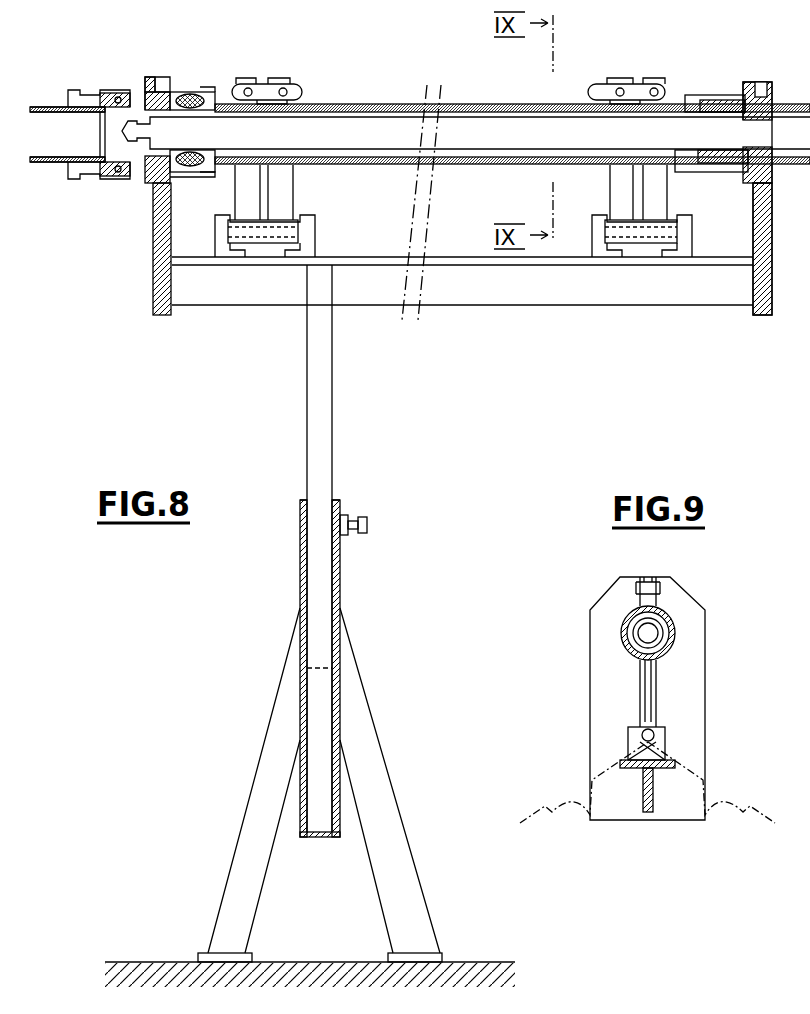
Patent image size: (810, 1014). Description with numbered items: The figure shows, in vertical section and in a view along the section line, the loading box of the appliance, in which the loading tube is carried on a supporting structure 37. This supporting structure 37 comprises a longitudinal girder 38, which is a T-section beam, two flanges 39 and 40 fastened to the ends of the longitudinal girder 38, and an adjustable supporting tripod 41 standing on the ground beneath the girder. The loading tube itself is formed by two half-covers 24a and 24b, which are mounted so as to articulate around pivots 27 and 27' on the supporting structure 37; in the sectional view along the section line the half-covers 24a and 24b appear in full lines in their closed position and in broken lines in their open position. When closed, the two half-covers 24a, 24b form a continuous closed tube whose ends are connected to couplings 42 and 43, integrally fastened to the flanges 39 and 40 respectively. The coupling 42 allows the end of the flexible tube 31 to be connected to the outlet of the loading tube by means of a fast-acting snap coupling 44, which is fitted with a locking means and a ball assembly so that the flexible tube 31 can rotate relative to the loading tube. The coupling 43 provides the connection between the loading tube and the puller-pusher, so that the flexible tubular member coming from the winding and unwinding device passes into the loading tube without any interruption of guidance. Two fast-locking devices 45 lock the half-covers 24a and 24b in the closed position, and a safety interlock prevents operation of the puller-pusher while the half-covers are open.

In FIG. 8, the flexible tube 31 is at (52, 107).
In FIG. 8, the fast-acting snap coupling 44 is at (108, 92).
In FIG. 8, the coupling 42 is at (178, 92).
In FIG. 8, the fast-locking device 45 is at (275, 88).
In FIG. 8, the coupling 43 is at (697, 95).
In FIG. 8, the flange 39 is at (153, 220).
In FIG. 8, the flange 40 is at (753, 215).
In FIG. 9, the flange 40 is at (600, 665).
In FIG. 8, the supporting structure 37 is at (143, 273).
In FIG. 8, the longitudinal girder 38 is at (211, 292).
In FIG. 9, the longitudinal girder 38 is at (640, 795).
In FIG. 8, the pivot 27 is at (265, 260).
In FIG. 9, the pivot 27 is at (596, 710).
In FIG. 8, the pivot 27' is at (642, 261).
In FIG. 8, the adjustable supporting tripod 41 is at (318, 580).
In FIG. 9, the half-cover 24a is at (566, 822).
In FIG. 9, the half-cover 24b is at (740, 822).